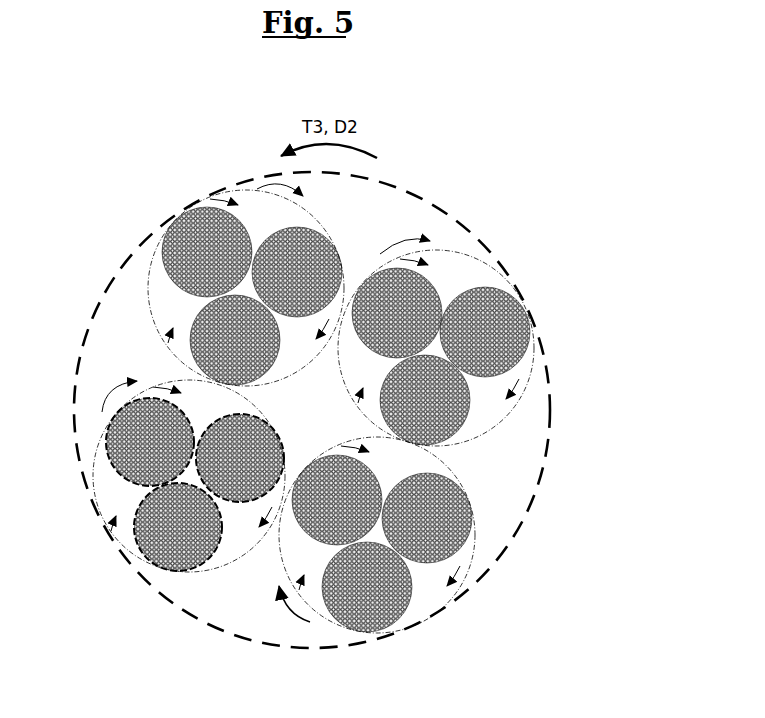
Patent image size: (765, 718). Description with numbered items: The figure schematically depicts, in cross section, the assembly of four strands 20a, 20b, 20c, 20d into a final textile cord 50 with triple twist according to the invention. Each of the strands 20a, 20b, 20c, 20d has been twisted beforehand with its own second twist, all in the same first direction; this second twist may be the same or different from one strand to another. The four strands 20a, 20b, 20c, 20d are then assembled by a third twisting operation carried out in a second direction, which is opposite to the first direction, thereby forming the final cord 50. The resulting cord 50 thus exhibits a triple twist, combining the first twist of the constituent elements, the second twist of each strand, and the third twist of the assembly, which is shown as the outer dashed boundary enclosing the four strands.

The final textile cord 50 is at (472, 234).
The strand 20a is at (148, 272).
The strand 20b is at (480, 432).
The strand 20c is at (470, 552).
The strand 20d is at (158, 568).